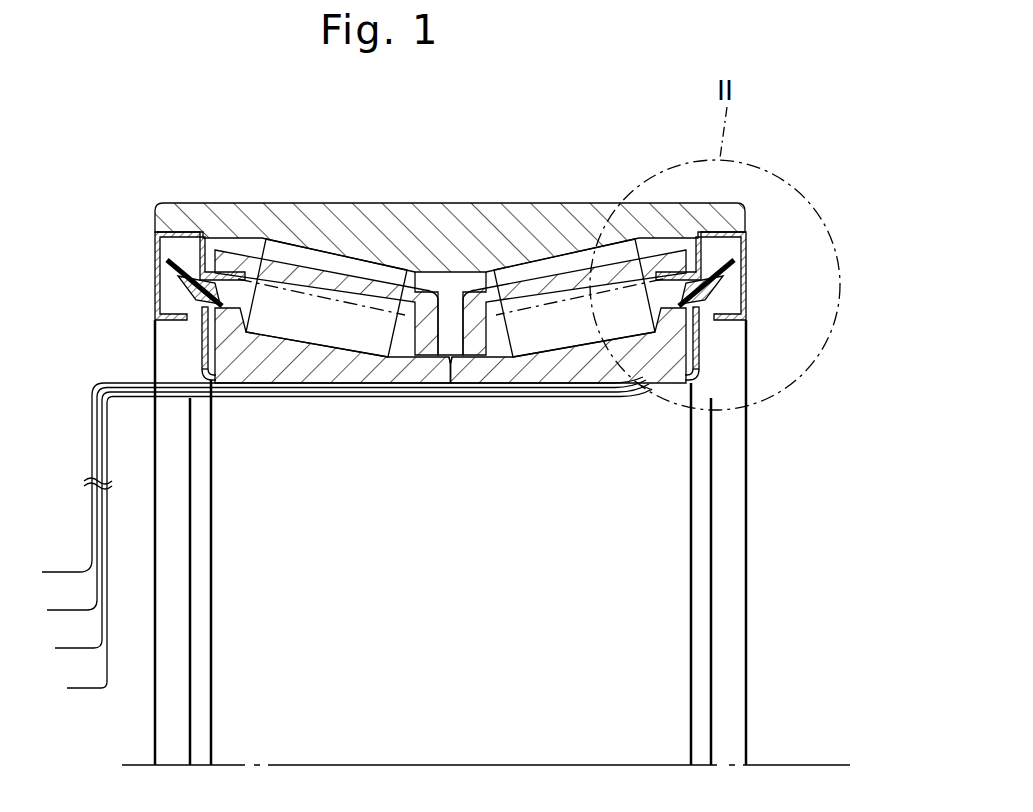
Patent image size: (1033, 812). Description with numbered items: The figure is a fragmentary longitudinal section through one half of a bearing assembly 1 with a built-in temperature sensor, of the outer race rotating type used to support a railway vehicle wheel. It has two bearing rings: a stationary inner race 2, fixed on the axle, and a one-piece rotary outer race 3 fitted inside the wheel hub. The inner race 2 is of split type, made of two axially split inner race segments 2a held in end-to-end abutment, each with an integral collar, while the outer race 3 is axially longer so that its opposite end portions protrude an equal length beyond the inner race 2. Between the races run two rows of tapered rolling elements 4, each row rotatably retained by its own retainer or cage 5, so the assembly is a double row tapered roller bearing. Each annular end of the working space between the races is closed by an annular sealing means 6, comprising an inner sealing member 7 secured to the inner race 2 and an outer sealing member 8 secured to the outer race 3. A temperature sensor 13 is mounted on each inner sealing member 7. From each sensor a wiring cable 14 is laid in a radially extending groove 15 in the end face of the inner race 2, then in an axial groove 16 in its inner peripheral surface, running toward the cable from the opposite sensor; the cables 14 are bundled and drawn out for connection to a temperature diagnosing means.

The bearing assembly 1 is at (262, 186).
The inner race 2 is at (598, 368).
The inner race segment 2a is at (352, 372).
The outer race 3 is at (494, 215).
The rolling elements 4 is at (323, 313).
The retainer or cage 5 is at (370, 287).
The annular sealing means 6 is at (77, 250).
The inner sealing member 7 is at (152, 290).
The outer sealing member 8 is at (152, 265).
The temperature sensor 13 is at (203, 340).
The wiring cable 14 is at (451, 385).
The radially extending groove 15 is at (643, 378).
The axial groove 16 is at (650, 392).